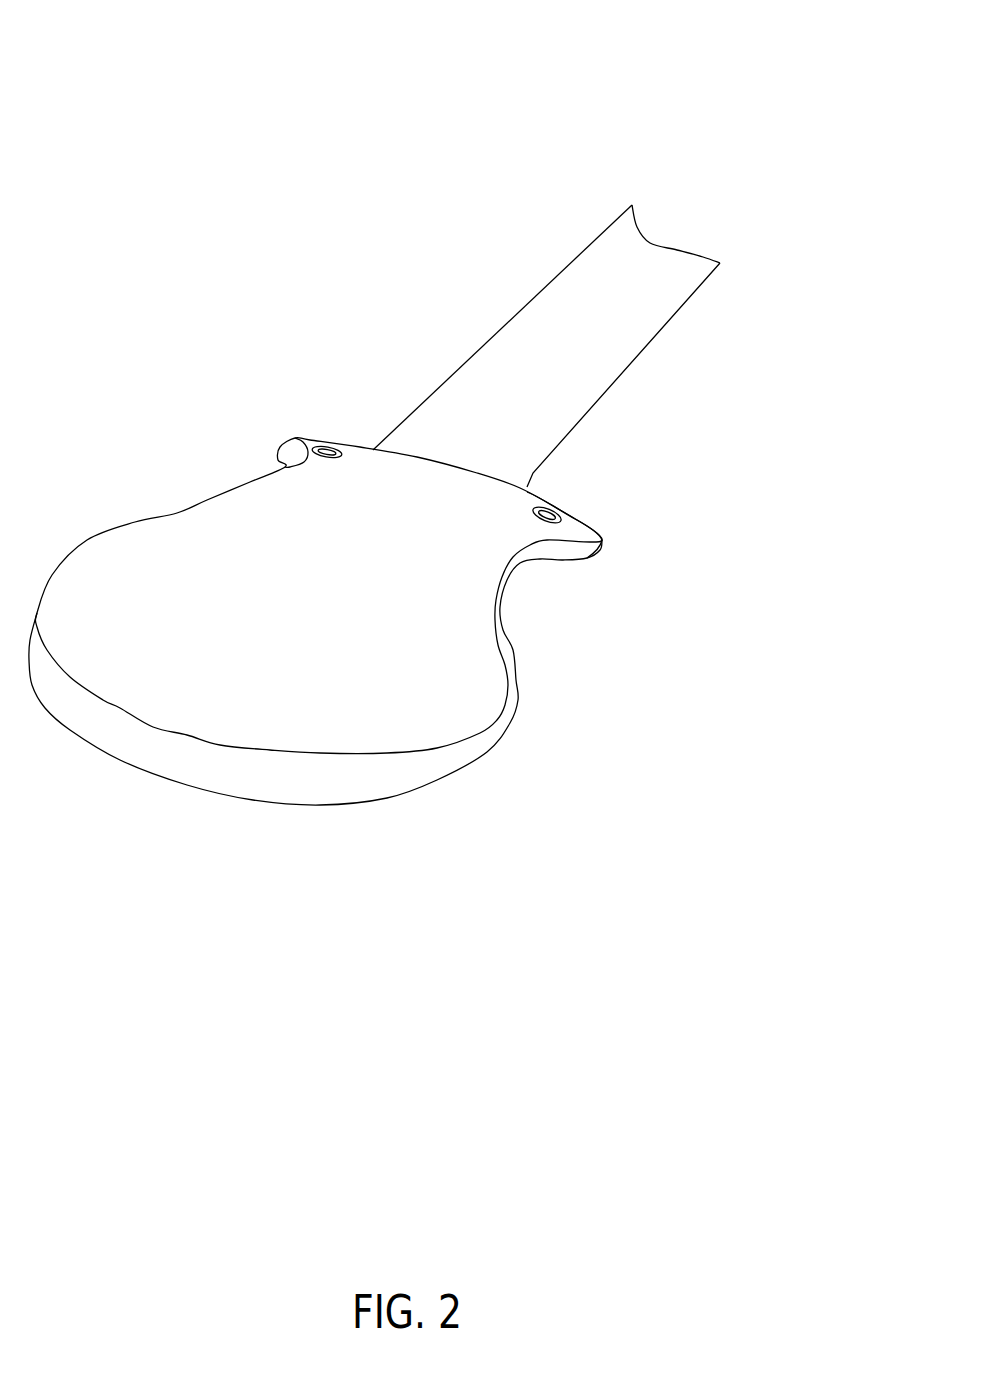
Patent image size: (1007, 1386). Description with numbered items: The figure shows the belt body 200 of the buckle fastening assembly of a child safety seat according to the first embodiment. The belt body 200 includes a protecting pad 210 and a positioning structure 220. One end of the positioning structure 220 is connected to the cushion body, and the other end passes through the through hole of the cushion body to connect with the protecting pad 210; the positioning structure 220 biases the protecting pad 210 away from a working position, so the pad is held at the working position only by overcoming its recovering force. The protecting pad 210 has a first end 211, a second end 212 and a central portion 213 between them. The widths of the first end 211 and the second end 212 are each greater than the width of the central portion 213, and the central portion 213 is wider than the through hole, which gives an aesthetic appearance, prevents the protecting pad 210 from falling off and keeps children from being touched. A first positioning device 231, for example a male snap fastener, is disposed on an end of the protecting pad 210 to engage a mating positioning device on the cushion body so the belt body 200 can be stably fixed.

The belt body 200 is at (117, 52).
The protecting pad 210 is at (175, 495).
The first end 211 is at (580, 533).
The second end 212 is at (405, 688).
The central portion 213 is at (488, 567).
The positioning structure 220 is at (543, 357).
The first positioning device 231 is at (330, 448).